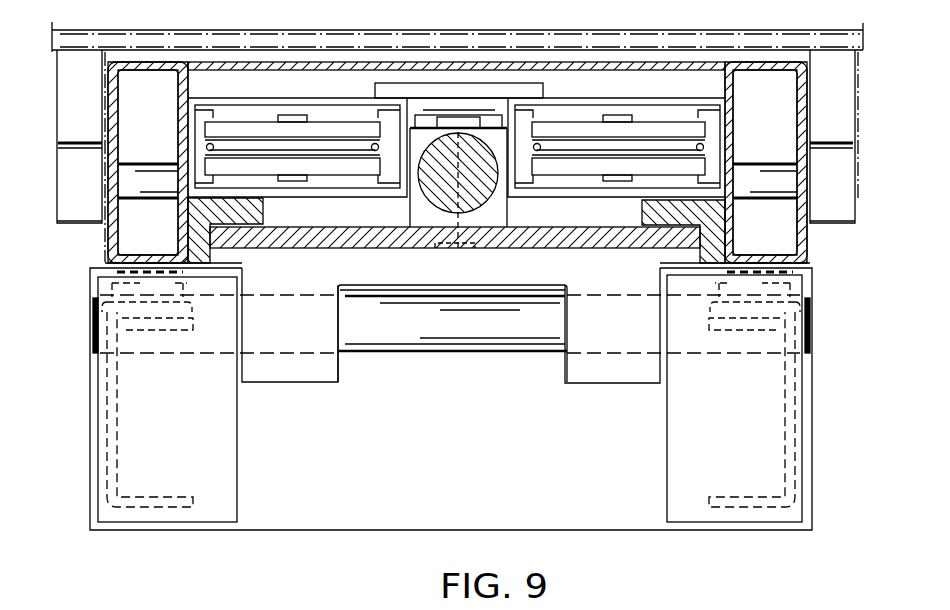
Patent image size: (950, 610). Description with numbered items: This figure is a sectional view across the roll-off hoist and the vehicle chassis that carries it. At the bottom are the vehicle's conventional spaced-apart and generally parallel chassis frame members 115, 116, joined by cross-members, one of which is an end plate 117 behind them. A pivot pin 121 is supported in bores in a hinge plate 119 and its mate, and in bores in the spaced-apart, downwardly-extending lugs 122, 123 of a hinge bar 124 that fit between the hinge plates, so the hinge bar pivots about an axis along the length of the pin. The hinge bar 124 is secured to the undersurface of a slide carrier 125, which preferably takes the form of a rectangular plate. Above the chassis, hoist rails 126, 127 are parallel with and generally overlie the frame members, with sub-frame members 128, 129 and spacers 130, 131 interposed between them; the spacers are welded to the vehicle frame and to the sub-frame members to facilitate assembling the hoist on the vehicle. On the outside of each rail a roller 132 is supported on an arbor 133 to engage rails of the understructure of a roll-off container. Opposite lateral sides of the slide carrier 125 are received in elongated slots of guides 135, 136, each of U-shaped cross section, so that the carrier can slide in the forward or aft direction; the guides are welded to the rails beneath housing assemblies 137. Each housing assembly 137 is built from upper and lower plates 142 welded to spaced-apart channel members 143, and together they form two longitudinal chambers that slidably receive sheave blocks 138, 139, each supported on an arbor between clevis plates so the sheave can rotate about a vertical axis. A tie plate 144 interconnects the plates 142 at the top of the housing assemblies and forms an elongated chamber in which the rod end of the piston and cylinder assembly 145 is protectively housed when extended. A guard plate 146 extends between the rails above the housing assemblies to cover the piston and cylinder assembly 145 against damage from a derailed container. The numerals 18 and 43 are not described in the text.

The left outer housing 18 is at (237, 447).
The left coil stack 43 is at (388, 183).
The chassis frame member 115 is at (150, 495).
The chassis frame member 116 is at (710, 496).
The end plate 117 is at (448, 493).
The hinge plate 119 is at (662, 447).
The pivot pin 121 is at (502, 354).
The lug 122 is at (291, 385).
The lug 123 is at (616, 384).
The hinge bar 124 is at (408, 277).
The slide carrier 125 is at (612, 241).
The hoist rail 126 is at (147, 63).
The hoist rail 127 is at (769, 63).
The sub-frame member 128 is at (100, 285).
The sub-frame member 129 is at (815, 285).
The spacer 130 is at (148, 312).
The spacer 131 is at (755, 313).
The roller 132 is at (68, 142).
The arbor 133 is at (133, 163).
The guide 135 is at (262, 213).
The guide 136 is at (642, 213).
The housing assembly 137 is at (253, 100).
The sheave block 138 is at (327, 118).
The sheave block 139 is at (596, 120).
The plate 142 is at (293, 100).
The channel member 143 is at (168, 111).
The tie plate 144 is at (408, 84).
The piston and cylinder assembly 145 is at (475, 139).
The guard plate 146 is at (246, 90).